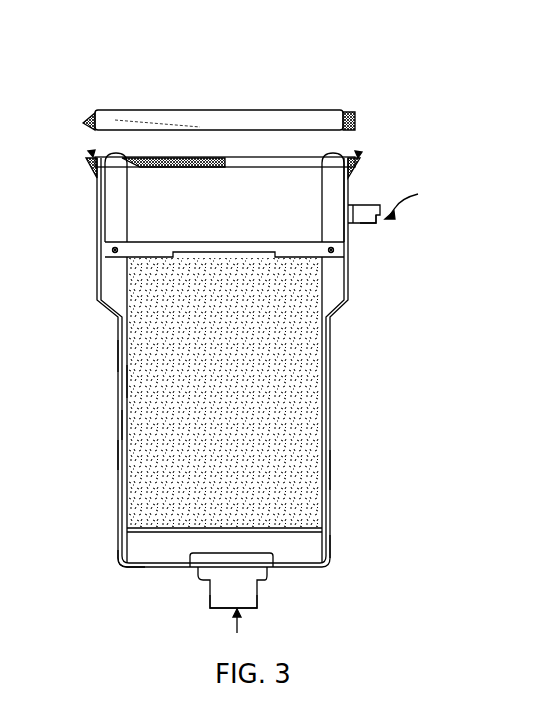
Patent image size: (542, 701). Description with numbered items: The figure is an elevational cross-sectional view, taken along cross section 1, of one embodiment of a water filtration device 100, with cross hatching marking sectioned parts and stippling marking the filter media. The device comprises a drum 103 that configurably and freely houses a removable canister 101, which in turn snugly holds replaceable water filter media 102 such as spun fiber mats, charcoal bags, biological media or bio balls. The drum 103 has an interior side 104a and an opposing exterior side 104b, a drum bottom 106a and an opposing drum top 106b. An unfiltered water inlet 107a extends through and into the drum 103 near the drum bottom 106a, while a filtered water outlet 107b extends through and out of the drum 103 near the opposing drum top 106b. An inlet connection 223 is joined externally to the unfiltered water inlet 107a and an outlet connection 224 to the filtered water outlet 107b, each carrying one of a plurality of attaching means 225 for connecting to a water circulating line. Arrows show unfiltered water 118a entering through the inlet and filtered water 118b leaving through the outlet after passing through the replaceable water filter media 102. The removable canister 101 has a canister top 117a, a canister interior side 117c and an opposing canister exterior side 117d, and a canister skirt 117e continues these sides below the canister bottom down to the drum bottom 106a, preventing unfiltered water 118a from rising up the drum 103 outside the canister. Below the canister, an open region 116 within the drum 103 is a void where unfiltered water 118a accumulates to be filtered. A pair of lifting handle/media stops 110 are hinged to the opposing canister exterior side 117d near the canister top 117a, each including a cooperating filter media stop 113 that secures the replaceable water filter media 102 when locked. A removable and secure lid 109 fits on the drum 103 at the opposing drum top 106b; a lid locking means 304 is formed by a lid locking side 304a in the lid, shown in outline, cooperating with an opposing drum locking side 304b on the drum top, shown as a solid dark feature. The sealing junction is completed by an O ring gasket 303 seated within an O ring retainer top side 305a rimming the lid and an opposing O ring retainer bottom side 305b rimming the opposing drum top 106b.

The cross section 1 is at (223, 43).
The water filtration device 100 is at (405, 50).
The removable canister 101 is at (322, 383).
The replaceable water filter media 102 is at (250, 393).
The drum 103 is at (329, 463).
The interior side 104a is at (127, 380).
The opposing exterior side 104b is at (118, 355).
The drum bottom 106a is at (141, 568).
The opposing drum top 106b is at (247, 158).
The unfiltered water inlet 107a is at (265, 588).
The filtered water outlet 107b is at (390, 235).
The removable and secure lid 109 is at (296, 110).
The lifting handle/media stops 110 is at (105, 210).
The cooperating filter media stop 113 is at (158, 250).
The open region 116 is at (224, 540).
The canister top 117a is at (183, 243).
The canister interior side 117c is at (130, 430).
The opposing canister exterior side 117d is at (123, 450).
The canister skirt 117e is at (330, 546).
The unfiltered water 118a is at (242, 633).
The filtered water 118b is at (420, 202).
The inlet connection 223 is at (162, 625).
The outlet connection 224 is at (380, 222).
The attaching means 225 is at (209, 610).
The O ring gasket 303 is at (90, 155).
The lid locking means 304 is at (205, 137).
The lid locking side 304a is at (138, 122).
The opposing drum locking side 304b is at (197, 92).
The O ring retainer top side 305a is at (84, 121).
The opposing O ring retainer bottom side 305b is at (88, 170).